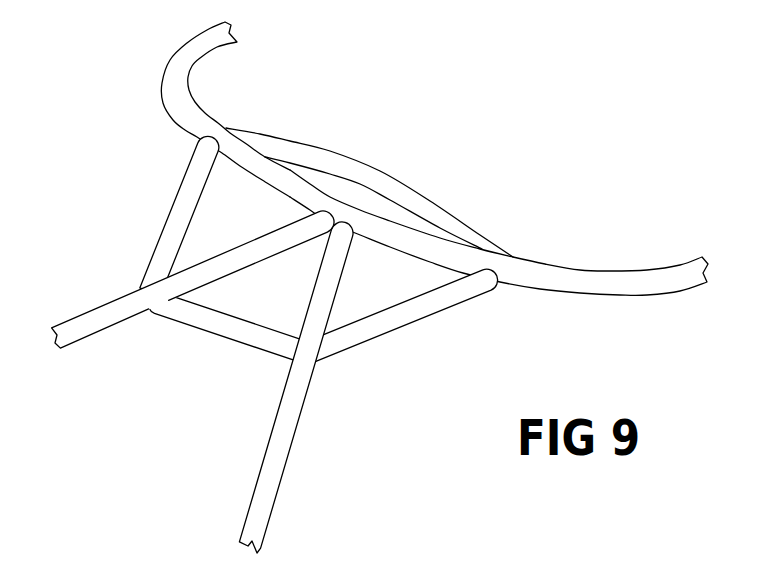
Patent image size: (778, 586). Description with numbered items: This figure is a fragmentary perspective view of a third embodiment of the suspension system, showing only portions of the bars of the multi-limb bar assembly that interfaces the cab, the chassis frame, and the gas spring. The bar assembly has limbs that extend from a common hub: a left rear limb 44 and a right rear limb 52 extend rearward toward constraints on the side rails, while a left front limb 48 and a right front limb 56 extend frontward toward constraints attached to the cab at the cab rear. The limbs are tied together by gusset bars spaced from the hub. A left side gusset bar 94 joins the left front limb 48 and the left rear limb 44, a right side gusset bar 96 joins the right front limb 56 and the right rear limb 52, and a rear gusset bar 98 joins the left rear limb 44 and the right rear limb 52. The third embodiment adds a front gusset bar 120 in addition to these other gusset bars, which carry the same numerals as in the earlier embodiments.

The left rear limb 44 is at (102, 323).
The left front limb 48 is at (182, 105).
The right rear limb 52 is at (280, 488).
The right front limb 56 is at (588, 282).
The left side gusset bar 94 is at (173, 217).
The right side gusset bar 96 is at (390, 323).
The rear gusset bar 98 is at (233, 333).
The front gusset bar 120 is at (405, 183).